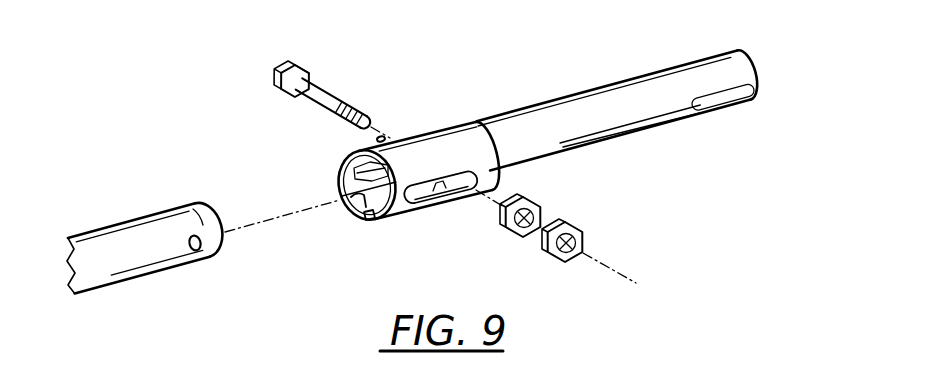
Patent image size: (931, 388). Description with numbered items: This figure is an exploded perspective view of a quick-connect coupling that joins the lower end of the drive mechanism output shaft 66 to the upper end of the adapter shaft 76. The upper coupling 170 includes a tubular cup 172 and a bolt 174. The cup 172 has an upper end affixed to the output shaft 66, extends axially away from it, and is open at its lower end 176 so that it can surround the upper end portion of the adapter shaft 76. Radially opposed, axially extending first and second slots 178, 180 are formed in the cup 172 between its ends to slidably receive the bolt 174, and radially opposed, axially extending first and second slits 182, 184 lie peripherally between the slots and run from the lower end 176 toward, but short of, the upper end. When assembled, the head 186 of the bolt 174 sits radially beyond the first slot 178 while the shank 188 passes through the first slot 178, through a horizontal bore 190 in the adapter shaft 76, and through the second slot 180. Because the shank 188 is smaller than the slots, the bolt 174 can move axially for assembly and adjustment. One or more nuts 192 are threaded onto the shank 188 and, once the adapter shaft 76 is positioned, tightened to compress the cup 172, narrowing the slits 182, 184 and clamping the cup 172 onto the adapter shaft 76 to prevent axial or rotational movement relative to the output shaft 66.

The output shaft 66 is at (634, 83).
The adapter shaft 76 is at (140, 227).
The upper coupling 170 is at (455, 121).
The tubular cup 172 is at (475, 154).
The bolt 174 is at (348, 69).
The lower end 176 is at (358, 197).
The first slot 178 is at (352, 167).
The second slot 180 is at (443, 193).
The first slit 182 is at (368, 220).
The second slit 184 is at (368, 147).
The head 186 is at (291, 64).
The shank 188 is at (343, 100).
The horizontal bore 190 is at (204, 252).
The nuts 192 is at (582, 229).